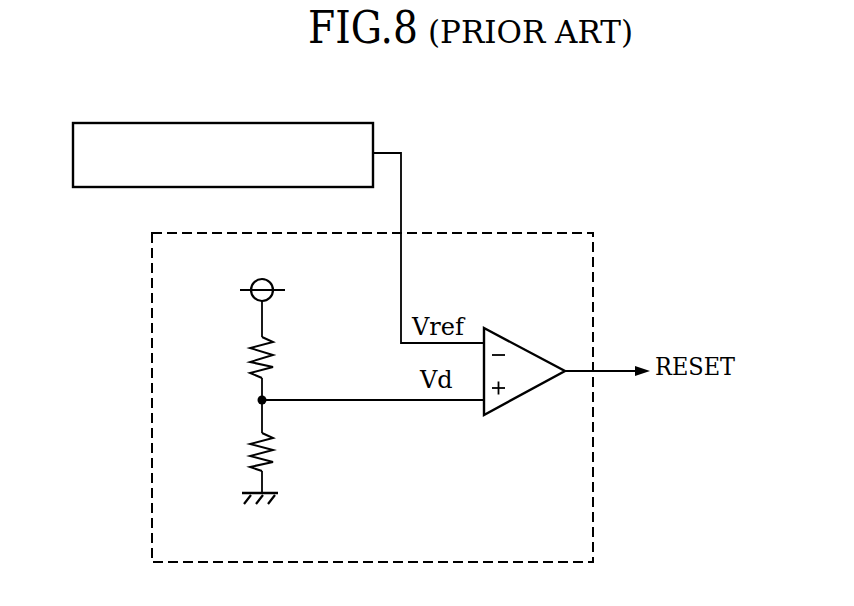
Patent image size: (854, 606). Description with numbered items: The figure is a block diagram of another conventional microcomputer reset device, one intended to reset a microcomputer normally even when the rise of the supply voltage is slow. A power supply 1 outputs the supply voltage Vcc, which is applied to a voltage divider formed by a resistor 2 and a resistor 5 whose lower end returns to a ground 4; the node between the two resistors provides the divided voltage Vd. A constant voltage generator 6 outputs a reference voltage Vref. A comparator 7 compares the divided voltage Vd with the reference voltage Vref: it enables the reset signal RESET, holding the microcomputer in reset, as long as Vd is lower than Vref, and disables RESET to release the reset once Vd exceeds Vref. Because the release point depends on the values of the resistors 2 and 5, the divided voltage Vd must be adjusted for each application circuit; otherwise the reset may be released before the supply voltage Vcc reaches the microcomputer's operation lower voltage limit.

The constant voltage generator 6 is at (72, 150).
The power supply 1 is at (277, 274).
The resistor 2 is at (281, 357).
The resistor 5 is at (282, 452).
The ground 4 is at (278, 493).
The comparator 7 is at (518, 346).